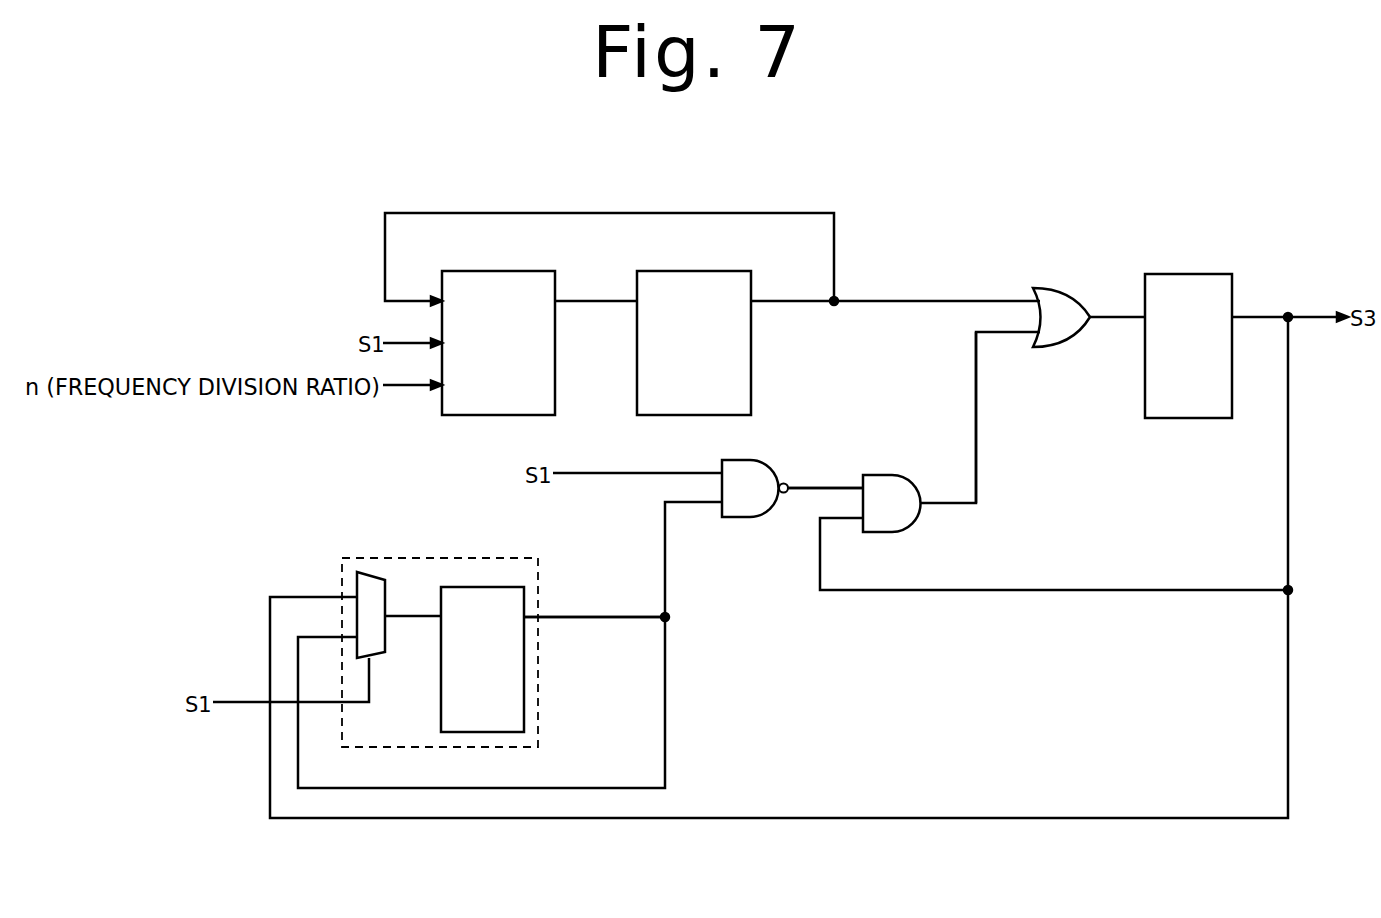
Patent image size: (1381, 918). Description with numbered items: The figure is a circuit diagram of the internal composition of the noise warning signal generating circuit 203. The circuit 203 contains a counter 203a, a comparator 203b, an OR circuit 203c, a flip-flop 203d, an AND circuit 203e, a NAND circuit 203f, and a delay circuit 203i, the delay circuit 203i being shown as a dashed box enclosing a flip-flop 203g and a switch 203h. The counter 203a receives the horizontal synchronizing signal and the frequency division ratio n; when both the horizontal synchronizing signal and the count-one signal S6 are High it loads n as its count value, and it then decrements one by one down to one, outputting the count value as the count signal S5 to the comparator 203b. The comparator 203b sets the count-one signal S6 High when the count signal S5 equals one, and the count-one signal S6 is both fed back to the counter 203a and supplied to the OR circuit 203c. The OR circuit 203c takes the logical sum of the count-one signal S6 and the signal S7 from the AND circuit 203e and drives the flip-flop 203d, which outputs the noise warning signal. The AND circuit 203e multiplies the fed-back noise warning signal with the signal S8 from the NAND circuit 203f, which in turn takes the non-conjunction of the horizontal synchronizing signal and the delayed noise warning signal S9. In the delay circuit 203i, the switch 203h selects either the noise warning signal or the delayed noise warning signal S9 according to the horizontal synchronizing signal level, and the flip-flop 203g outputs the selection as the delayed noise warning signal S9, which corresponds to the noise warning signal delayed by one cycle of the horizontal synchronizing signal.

The noise warning signal generating circuit 203 is at (905, 192).
The counter 203a is at (555, 358).
The comparator 203b is at (751, 358).
The OR circuit 203c is at (1056, 287).
The flip-flop 203d is at (1190, 418).
The AND circuit 203e is at (887, 475).
The NAND circuit 203f is at (748, 517).
The flip-flop 203g is at (480, 587).
The switch 203h is at (367, 572).
The delay circuit 203i is at (540, 685).
The count signal S5 is at (595, 297).
The count 1 signal S6 is at (792, 297).
The signal from the AND circuit S7 is at (976, 414).
The signal from the NAND circuit S8 is at (818, 484).
The delayed noise warning signal S9 is at (606, 614).